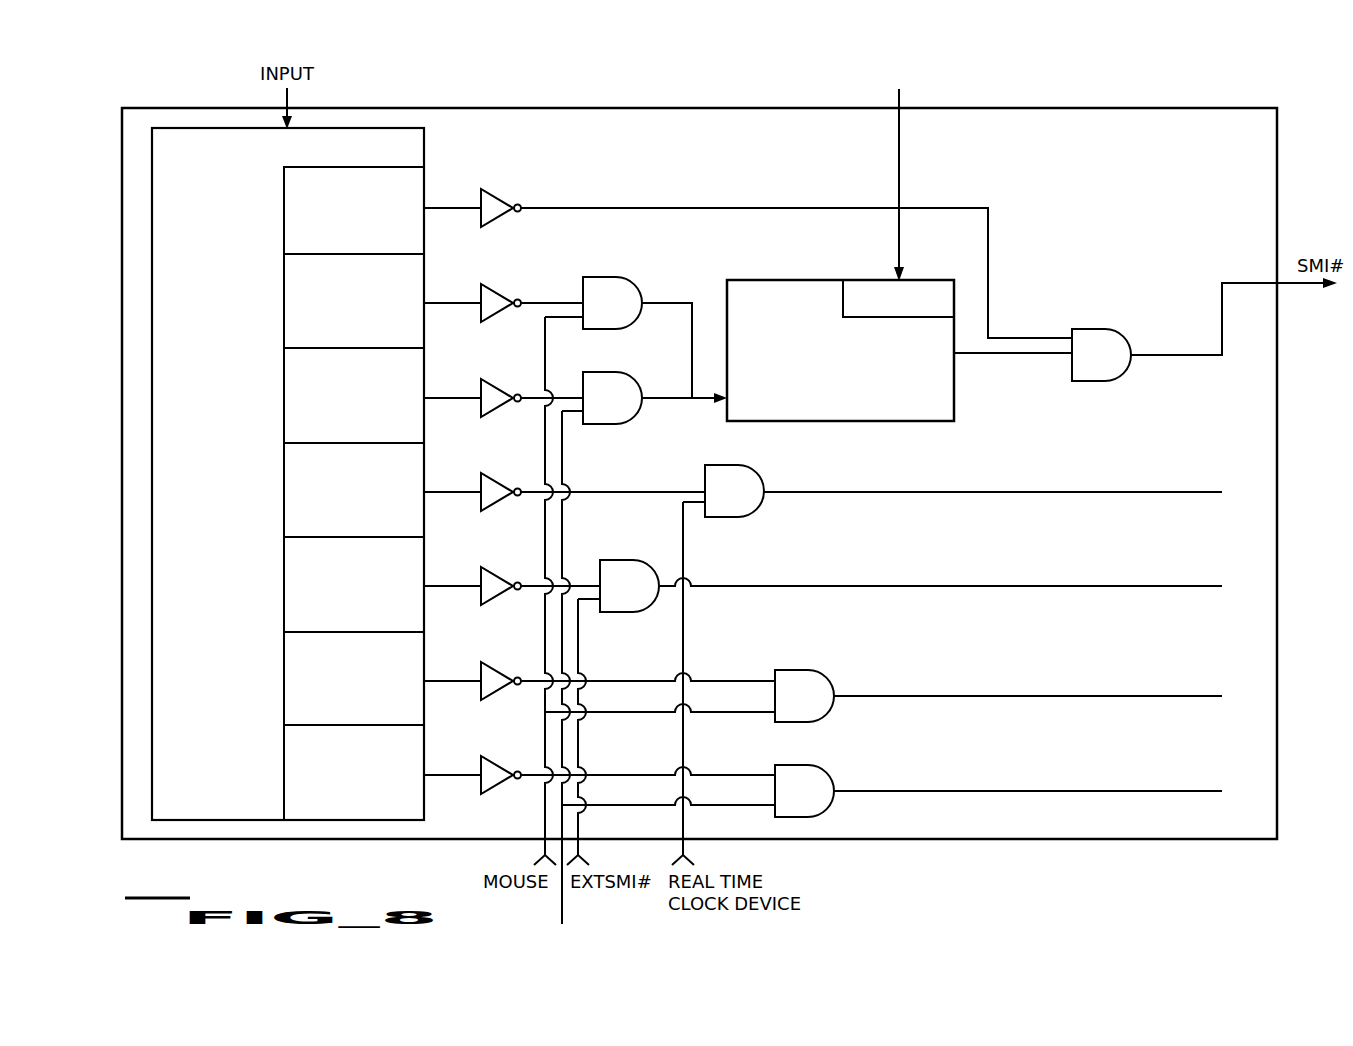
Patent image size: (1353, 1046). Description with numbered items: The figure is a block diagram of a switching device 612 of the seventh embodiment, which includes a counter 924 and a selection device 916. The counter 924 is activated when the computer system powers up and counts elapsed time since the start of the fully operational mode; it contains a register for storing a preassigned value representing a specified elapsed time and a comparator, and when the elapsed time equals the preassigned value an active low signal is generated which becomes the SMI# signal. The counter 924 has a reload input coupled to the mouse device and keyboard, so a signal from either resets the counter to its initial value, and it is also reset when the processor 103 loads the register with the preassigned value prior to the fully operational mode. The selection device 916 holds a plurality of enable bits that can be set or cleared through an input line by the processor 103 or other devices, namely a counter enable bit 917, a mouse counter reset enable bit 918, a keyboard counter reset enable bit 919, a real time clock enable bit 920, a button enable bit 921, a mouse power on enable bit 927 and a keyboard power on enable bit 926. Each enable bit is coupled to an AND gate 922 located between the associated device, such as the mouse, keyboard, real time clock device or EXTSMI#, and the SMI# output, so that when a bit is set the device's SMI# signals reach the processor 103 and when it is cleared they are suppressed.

The switching device 612 is at (772, 149).
The selection device 916 is at (396, 159).
The counter enable bit 917 is at (337, 246).
The mouse counter reset enable bit 918 is at (337, 340).
The keyboard counter reset enable bit 919 is at (337, 431).
The real time clock enable bit 920 is at (412, 525).
The button enable bit 921 is at (337, 619).
The mouse power on enable bit 927 is at (412, 711).
The keyboard power on enable bit 926 is at (412, 808).
The AND gate 922 is at (625, 315).
The counter 924 is at (770, 361).
The processor 103 is at (903, 172).